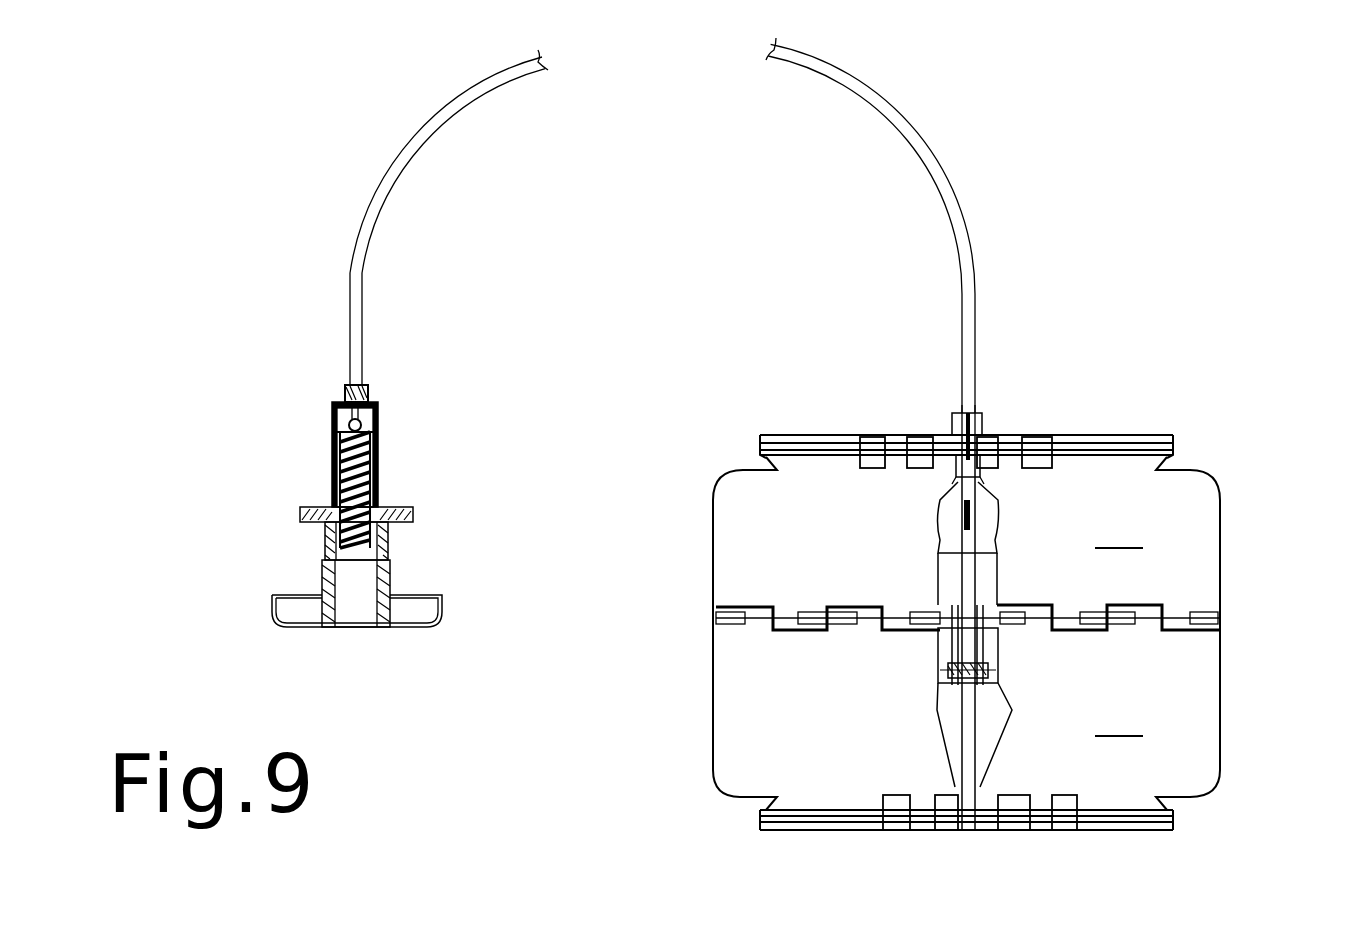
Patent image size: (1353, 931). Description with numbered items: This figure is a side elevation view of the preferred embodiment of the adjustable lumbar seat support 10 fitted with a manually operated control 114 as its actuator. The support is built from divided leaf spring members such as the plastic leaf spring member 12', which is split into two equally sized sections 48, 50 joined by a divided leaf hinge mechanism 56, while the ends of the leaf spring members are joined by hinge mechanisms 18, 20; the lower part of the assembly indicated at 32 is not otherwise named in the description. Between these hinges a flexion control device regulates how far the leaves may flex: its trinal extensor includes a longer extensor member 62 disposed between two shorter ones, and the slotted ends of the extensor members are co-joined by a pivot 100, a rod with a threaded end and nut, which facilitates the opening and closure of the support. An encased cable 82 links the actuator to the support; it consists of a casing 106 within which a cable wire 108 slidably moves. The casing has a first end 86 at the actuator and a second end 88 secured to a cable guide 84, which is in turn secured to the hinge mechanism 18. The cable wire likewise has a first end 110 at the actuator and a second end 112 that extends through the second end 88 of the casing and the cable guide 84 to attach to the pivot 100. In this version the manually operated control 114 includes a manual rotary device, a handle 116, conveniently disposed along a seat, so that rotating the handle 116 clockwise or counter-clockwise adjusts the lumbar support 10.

The adjustable lumbar seat support 10 is at (658, 668).
The leaf spring member 12' is at (966, 633).
The hinge mechanism 18 is at (1178, 448).
The hinge mechanism 20 is at (1178, 815).
The lower housing portion 32 is at (690, 735).
The section 48 is at (1137, 718).
The section 50 is at (1137, 515).
The divided leaf hinge mechanism 56 is at (718, 625).
The longer extensor member 62 is at (955, 750).
The encased cable 82 is at (845, 80).
The cable guide 84 is at (980, 410).
The first end of casing 86 is at (365, 358).
The second end of casing 88 is at (952, 405).
The pivot 100 is at (962, 605).
The casing 106 is at (905, 138).
The cable wire 108 is at (950, 530).
The first end of cable wire 110 is at (362, 413).
The second end of cable wire 112 is at (968, 605).
The manually operated control 114 is at (298, 452).
The handle 116 is at (392, 560).